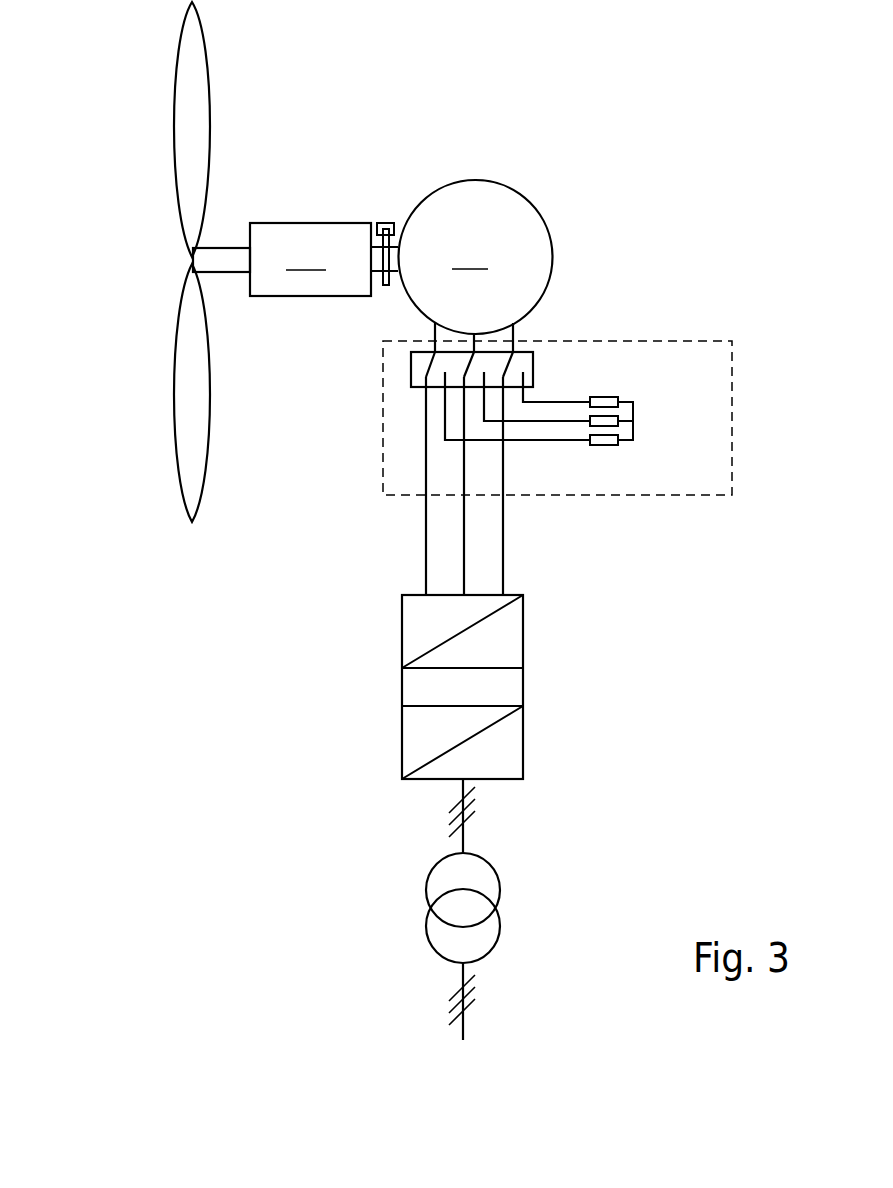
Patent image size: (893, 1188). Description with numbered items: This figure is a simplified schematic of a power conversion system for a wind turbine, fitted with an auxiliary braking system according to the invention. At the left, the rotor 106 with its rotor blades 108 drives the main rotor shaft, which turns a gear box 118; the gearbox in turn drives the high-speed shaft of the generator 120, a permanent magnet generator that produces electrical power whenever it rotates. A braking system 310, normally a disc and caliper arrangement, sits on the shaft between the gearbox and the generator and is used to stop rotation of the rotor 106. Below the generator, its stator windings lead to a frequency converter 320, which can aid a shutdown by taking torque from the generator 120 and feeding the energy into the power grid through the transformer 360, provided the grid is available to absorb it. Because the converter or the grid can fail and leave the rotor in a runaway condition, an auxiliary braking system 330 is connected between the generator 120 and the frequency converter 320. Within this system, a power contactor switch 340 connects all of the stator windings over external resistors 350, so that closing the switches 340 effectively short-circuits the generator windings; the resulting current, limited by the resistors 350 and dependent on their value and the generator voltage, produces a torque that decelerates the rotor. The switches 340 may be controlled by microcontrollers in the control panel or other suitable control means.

The rotor 106 is at (120, 221).
The rotor blades 108 is at (208, 62).
The gear box 118 is at (324, 259).
The generator 120 is at (476, 266).
The braking system 310 is at (387, 222).
The frequency converter 320 is at (402, 678).
The auxiliary braking system 330 is at (732, 360).
The power contactor switch 340 is at (533, 352).
The external resistors 350 is at (609, 468).
The transformer 360 is at (428, 896).